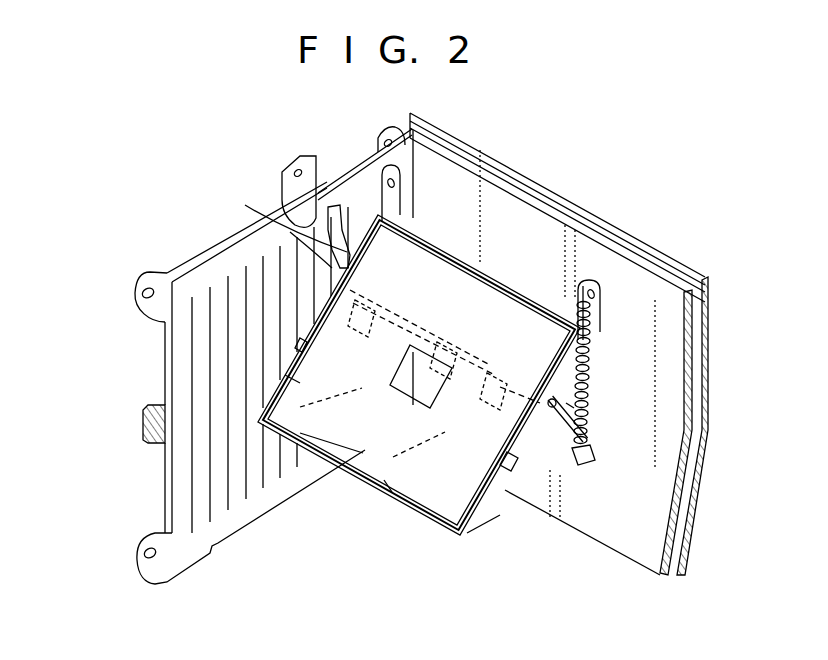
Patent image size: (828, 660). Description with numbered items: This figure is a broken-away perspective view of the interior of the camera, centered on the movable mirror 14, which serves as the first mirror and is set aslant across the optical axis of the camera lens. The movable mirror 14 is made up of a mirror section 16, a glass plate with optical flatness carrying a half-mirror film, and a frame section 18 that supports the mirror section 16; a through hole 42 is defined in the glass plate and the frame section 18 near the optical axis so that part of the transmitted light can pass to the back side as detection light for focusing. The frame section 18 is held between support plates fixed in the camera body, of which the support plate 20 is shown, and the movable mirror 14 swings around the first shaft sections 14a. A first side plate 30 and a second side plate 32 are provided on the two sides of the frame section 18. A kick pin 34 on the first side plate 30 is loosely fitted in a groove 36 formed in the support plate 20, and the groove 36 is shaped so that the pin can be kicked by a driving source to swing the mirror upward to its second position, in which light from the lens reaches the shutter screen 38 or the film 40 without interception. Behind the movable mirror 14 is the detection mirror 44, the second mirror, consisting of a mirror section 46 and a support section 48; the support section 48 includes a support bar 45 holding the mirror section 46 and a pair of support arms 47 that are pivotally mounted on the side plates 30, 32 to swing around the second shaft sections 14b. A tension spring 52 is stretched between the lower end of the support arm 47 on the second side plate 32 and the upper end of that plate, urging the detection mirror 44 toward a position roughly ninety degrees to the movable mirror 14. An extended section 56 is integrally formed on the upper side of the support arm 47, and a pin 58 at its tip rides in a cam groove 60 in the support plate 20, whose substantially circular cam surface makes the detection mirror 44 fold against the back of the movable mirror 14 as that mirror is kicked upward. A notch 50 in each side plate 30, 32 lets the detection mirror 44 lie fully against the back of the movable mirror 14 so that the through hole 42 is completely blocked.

The movable mirror 14 is at (425, 530).
The first shaft sections 14a is at (403, 188).
The second shaft sections 14b is at (550, 398).
The mirror section 16 is at (356, 476).
The frame section 18 is at (383, 488).
The support plate 20 is at (198, 287).
The first side plate 30 is at (292, 368).
The second side plate 32 is at (490, 517).
The kick pin 34 is at (348, 192).
The groove 36 is at (332, 210).
The shutter screen 38 is at (662, 437).
The film 40 is at (696, 392).
The through hole 42 is at (398, 380).
The detection mirror 44 is at (500, 382).
The support bar 45 is at (507, 422).
The mirror section 46 is at (458, 360).
The support arms 47 is at (580, 432).
The support section 48 is at (576, 404).
The notch 50 is at (315, 342).
The tension spring 52 is at (592, 346).
The extended section 56 is at (248, 243).
The pin 58 is at (282, 217).
The cam groove 60 is at (300, 215).